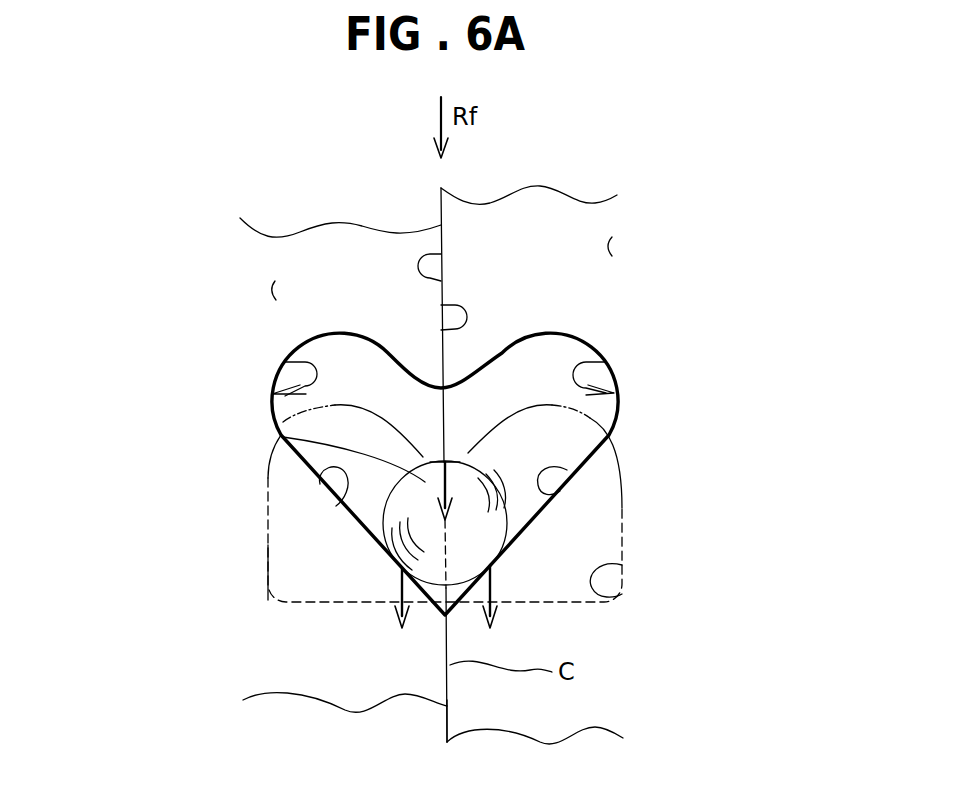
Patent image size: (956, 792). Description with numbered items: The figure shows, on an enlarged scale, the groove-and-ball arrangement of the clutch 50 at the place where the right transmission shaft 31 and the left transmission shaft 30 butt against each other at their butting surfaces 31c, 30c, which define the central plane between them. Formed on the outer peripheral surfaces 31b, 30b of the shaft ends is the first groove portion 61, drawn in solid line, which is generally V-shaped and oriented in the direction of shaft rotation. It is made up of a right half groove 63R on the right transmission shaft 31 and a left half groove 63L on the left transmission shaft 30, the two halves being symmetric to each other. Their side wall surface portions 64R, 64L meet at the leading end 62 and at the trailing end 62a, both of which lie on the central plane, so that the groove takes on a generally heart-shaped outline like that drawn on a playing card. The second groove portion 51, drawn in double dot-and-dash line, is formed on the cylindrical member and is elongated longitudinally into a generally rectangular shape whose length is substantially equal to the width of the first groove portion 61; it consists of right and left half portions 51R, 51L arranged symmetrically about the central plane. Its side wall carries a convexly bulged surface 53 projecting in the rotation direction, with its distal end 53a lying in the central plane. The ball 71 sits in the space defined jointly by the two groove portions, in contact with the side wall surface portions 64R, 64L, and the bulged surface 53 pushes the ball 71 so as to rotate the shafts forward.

The clutch 50 is at (133, 235).
The right transmission shaft 31 is at (293, 238).
The outer peripheral surface 31b is at (272, 290).
The butting surface 31c is at (445, 330).
The left transmission shaft 30 is at (585, 205).
The outer peripheral surface 30b is at (614, 245).
The butting surface 30c is at (441, 258).
The first groove portion 61 is at (548, 362).
The leading end 62 is at (445, 617).
The trailing end 62a is at (448, 378).
The right half groove 63R is at (293, 362).
The left half groove 63L is at (617, 367).
The right side wall surface portion 64R is at (337, 505).
The left side wall surface portion 64L is at (558, 492).
The convexly bulged surface 53 is at (475, 473).
The distal end 53a is at (283, 437).
The ball 71 is at (495, 545).
The second groove portion 51 is at (623, 596).
The right half portion 51R is at (268, 556).
The left half portion 51L is at (622, 543).